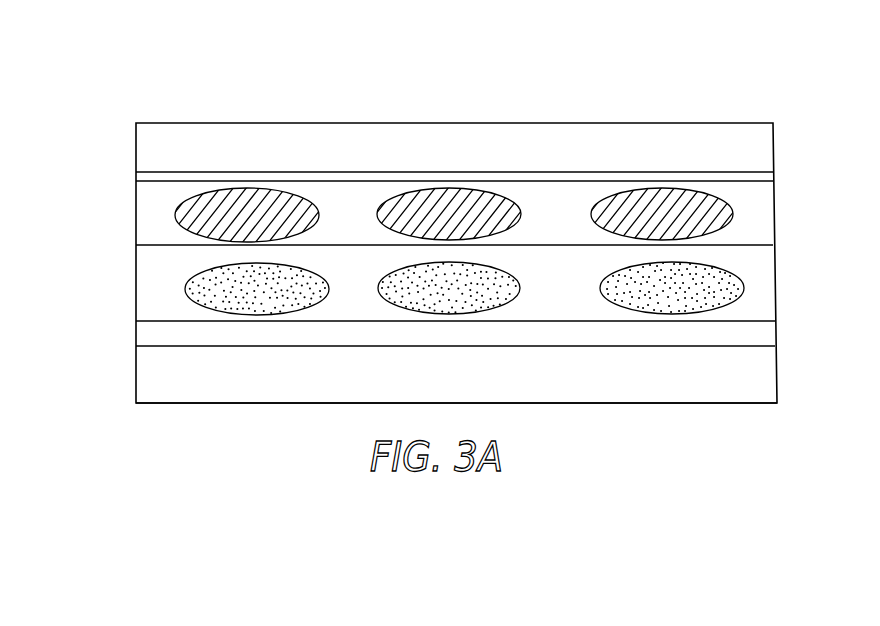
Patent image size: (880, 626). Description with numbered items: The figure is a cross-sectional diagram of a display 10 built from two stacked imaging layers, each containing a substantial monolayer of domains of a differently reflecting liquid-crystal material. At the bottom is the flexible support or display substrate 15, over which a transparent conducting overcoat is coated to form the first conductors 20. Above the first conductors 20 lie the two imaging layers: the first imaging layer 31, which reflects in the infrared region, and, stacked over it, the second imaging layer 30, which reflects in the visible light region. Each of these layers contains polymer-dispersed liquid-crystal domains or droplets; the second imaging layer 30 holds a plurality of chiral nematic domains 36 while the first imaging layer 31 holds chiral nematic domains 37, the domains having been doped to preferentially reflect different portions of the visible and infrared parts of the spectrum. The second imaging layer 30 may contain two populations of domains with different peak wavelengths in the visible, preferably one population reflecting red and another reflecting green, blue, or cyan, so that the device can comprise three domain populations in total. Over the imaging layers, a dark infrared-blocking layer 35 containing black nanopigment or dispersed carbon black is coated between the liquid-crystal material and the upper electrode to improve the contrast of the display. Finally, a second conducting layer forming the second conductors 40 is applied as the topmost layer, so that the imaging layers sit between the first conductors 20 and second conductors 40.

The display 10 is at (112, 108).
The second conductors 40 is at (136, 148).
The dark infrared-blocking layer 35 is at (136, 178).
The second imaging layer 30 is at (136, 216).
The chiral nematic domains 36 is at (312, 201).
The first imaging layer 31 is at (138, 277).
The chiral nematic domains 37 is at (320, 274).
The first conductors 20 is at (138, 330).
The display substrate 15 is at (138, 369).